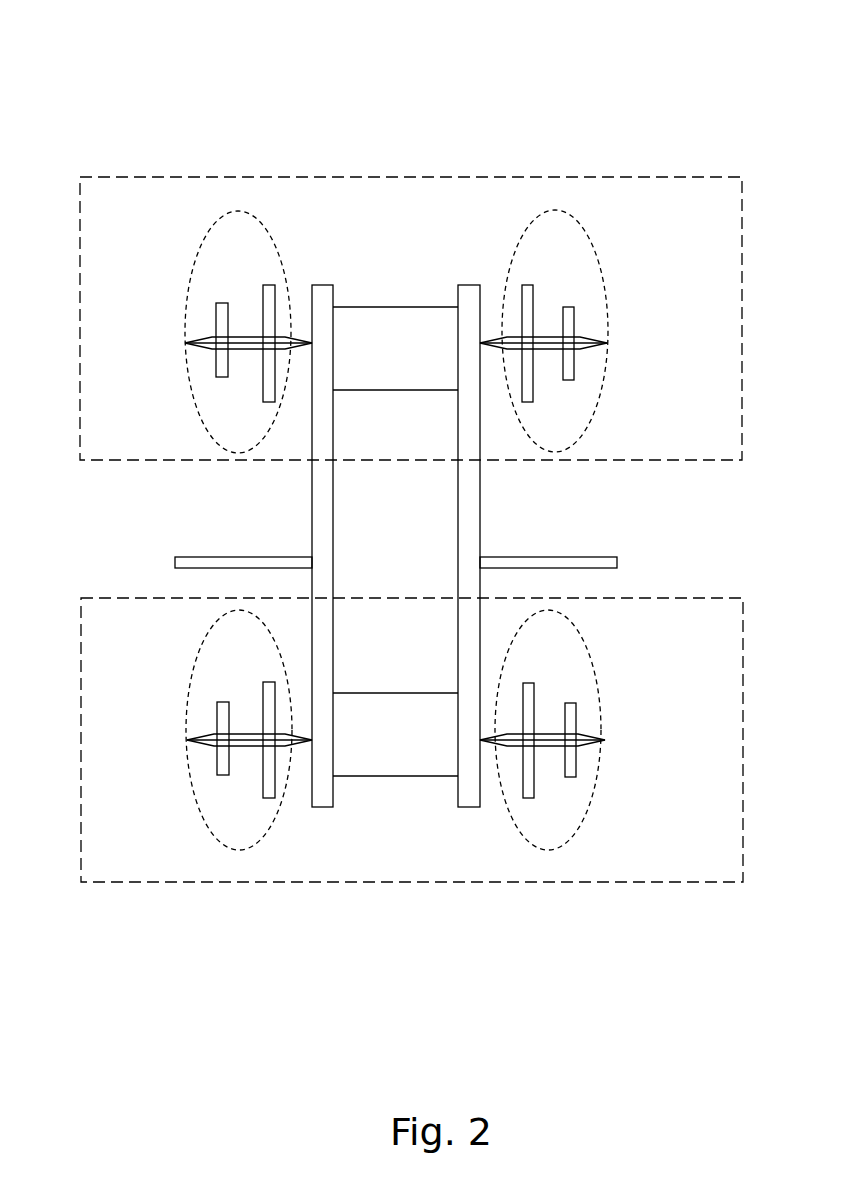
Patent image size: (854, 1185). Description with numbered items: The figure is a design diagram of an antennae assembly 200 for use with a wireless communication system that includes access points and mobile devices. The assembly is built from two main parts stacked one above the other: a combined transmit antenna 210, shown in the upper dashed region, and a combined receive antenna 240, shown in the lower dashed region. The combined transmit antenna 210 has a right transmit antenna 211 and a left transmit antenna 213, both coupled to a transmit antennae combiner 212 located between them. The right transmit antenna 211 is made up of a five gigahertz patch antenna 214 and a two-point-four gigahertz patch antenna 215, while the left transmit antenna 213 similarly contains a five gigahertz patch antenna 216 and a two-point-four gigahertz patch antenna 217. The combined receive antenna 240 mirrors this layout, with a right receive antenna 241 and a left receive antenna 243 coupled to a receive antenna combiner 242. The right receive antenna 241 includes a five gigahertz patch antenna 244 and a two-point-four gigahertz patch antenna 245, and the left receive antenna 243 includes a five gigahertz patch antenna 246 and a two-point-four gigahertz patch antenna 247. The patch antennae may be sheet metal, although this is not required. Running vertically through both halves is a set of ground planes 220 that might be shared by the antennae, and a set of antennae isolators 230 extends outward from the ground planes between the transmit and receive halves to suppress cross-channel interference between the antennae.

The antennae assembly 200 is at (166, 105).
The combined transmit antenna 210 is at (678, 177).
The right transmit antenna 211 is at (567, 210).
The transmit antennae combiner 212 is at (379, 359).
The left transmit antenna 213 is at (187, 315).
The 5 GHz patch antenna 214 is at (570, 368).
The 2.4 GHz patch antenna 215 is at (532, 287).
The 5 GHz patch antenna 216 is at (216, 305).
The 2.4 GHz patch antenna 217 is at (270, 285).
The ground planes 220 is at (312, 473).
The antennae isolators 230 is at (187, 557).
The combined receive antenna 240 is at (673, 598).
The right receive antenna 241 is at (585, 643).
The receive antenna combiner 242 is at (379, 747).
The left receive antenna 243 is at (187, 712).
The 5 GHz patch antenna 244 is at (573, 765).
The 2.4 GHz patch antenna 245 is at (528, 685).
The 5 GHz patch antenna 246 is at (217, 702).
The 2.4 GHz patch antenna 247 is at (273, 798).